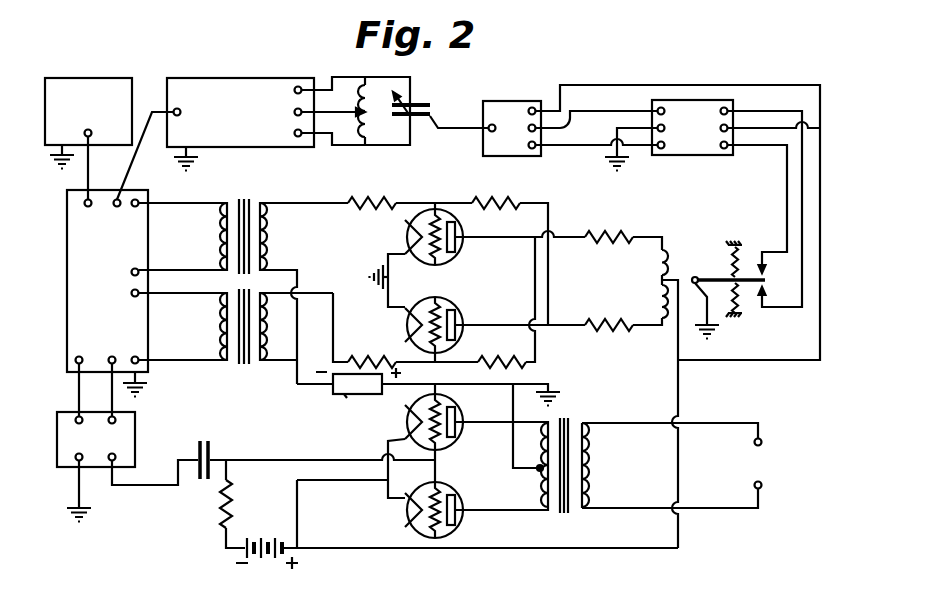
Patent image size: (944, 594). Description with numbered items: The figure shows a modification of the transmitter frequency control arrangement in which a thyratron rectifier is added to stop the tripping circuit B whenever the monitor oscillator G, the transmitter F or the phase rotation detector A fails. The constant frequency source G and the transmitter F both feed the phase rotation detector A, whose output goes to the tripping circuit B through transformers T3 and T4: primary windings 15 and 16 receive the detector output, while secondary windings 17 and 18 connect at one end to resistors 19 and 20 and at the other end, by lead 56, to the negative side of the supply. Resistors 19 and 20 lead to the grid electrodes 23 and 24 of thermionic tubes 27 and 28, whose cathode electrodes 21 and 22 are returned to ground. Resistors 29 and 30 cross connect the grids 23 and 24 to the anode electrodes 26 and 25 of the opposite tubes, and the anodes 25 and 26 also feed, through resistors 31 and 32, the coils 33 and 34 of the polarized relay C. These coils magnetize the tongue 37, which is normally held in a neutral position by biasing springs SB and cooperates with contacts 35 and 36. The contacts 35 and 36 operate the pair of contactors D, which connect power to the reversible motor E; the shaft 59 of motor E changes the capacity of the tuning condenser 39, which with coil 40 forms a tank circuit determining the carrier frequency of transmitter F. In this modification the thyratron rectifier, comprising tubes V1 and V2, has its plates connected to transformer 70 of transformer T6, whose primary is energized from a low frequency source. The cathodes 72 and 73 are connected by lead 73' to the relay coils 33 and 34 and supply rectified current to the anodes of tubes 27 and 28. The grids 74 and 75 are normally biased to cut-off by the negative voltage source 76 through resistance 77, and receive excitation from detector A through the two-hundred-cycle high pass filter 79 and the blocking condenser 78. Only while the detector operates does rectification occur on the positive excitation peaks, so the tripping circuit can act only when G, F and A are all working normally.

The primary winding 15 is at (221, 347).
The primary winding 16 is at (218, 234).
The secondary winding 17 is at (266, 348).
The secondary winding 18 is at (268, 251).
The resistor 19 is at (352, 361).
The resistor 20 is at (361, 202).
The cathode electrode 21 is at (407, 325).
The cathode electrode 22 is at (408, 240).
The grid electrode 23 is at (450, 294).
The grid electrode 24 is at (431, 262).
The anode electrode 25 is at (460, 312).
The anode electrode 26 is at (463, 247).
The thermionic tube 27 is at (478, 320).
The thermionic tube 28 is at (478, 255).
The resistor 29 is at (493, 361).
The resistor 30 is at (494, 202).
The resistor 31 is at (611, 334).
The resistor 32 is at (598, 234).
The relay coil 33 is at (658, 300).
The relay coil 34 is at (658, 265).
The relay contact 35 is at (765, 295).
The relay contact 36 is at (765, 270).
The tongue 37 is at (696, 268).
The tuning condenser 39 is at (412, 118).
The coil 40 is at (360, 140).
The lead 56 is at (297, 384).
The shaft 59 is at (455, 134).
The transformer 70 is at (541, 481).
The cathode 72 is at (409, 425).
The cathode 73 is at (398, 514).
The lead 73' is at (324, 496).
The grid 74 is at (457, 433).
The grid 75 is at (461, 522).
The negative voltage source 76 is at (457, 524).
The resistance 77 is at (219, 503).
The blocking condenser 78 is at (211, 439).
The high pass filter 79 is at (55, 530).
The phase rotation detector A is at (107, 303).
The tripping circuit B is at (443, 419).
The polarized relay C is at (711, 388).
The contactors D is at (700, 168).
The reversible motor E is at (522, 99).
The transmitter F is at (232, 78).
The monitor oscillator G is at (86, 79).
The thyratron tube V1 is at (465, 441).
The thyratron tube V2 is at (461, 506).
The transformer T3 is at (236, 336).
The transformer T4 is at (244, 283).
The transformer T6 is at (638, 458).
The biasing springs SB is at (728, 256).